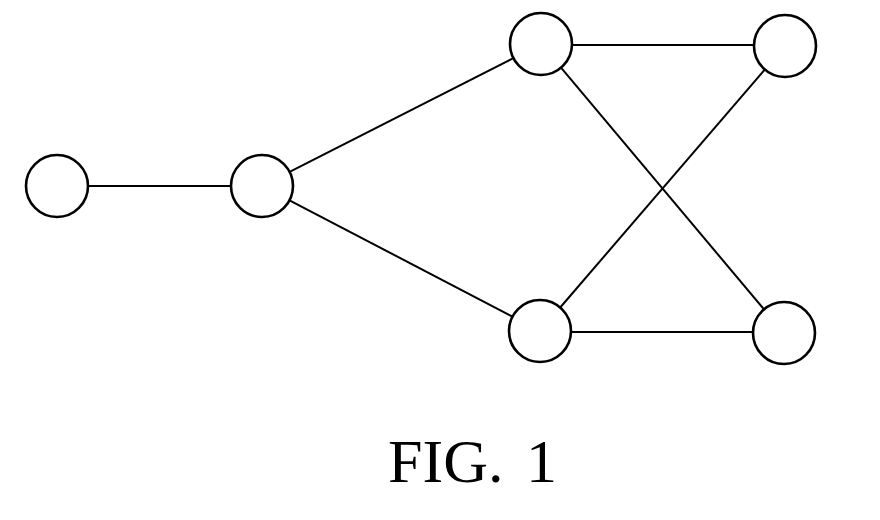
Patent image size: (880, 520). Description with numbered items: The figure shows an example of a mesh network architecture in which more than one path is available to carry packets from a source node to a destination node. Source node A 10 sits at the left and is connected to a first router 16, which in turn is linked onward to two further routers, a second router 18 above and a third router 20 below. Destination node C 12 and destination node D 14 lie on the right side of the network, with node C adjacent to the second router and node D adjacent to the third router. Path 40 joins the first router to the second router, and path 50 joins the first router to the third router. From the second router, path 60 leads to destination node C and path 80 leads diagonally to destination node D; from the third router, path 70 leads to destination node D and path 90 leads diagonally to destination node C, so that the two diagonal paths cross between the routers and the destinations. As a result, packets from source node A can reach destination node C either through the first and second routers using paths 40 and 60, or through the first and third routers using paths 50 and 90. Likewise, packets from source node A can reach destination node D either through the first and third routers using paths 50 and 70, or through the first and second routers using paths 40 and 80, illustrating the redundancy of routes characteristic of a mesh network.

The source node A 10 is at (42, 154).
The destination node C 12 is at (800, 77).
The destination node D 14 is at (799, 303).
The router R1 16 is at (249, 154).
The router R2 18 is at (528, 74).
The router R3 20 is at (523, 301).
The path 40 is at (385, 125).
The path 50 is at (385, 245).
The path 60 is at (665, 46).
The path 70 is at (665, 331).
The path 80 is at (618, 138).
The path 90 is at (703, 138).